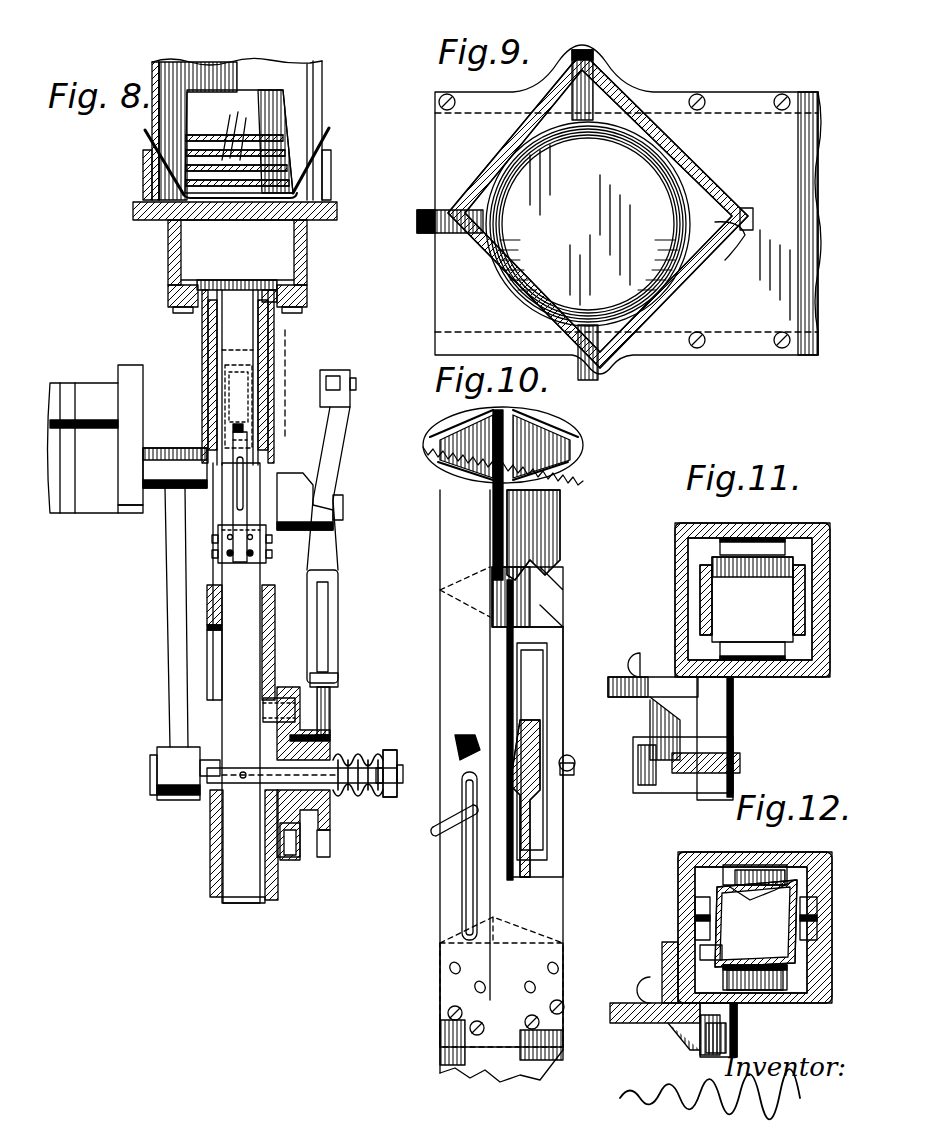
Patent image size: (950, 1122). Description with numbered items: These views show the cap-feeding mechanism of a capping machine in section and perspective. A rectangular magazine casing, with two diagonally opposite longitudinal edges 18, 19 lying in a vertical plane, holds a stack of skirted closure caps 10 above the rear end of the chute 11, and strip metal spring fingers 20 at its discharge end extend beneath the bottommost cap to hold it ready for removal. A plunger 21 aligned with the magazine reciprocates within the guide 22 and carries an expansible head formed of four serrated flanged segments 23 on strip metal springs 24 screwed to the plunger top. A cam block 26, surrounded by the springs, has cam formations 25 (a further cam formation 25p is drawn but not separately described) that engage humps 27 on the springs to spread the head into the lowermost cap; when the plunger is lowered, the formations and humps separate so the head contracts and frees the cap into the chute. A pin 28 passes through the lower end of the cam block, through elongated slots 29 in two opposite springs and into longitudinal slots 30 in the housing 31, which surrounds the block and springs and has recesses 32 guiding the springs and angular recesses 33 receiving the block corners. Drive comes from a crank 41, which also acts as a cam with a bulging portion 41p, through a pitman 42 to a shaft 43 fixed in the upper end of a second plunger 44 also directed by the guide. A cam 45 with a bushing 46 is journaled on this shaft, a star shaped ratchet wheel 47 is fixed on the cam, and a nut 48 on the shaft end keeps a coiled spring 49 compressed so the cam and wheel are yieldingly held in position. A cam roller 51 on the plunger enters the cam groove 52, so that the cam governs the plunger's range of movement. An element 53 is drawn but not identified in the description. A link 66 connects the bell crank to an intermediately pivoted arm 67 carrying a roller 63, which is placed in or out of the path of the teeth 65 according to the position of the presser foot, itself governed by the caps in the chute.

In FIG. 8, the closure caps 10 is at (239, 141).
In FIG. 9, the closure caps 10 is at (647, 187).
In FIG. 8, the chute 11 is at (273, 251).
In FIG. 9, the chute 11 is at (806, 95).
In FIG. 9, the upper longitudinal edge 18 is at (443, 212).
In FIG. 8, the longitudinal edge 19 is at (237, 68).
In FIG. 9, the longitudinal edge 19 is at (743, 238).
In FIG. 8, the spring fingers 20 is at (150, 160).
In FIG. 9, the spring fingers 20 is at (595, 55).
In FIG. 8, the plunger 21 is at (250, 625).
In FIG. 10, the plunger 21 is at (455, 1045).
In FIG. 8, the guide 22 is at (205, 598).
In FIG. 8, the flanged segments 23 is at (233, 280).
In FIG. 10, the flanged segments 23 is at (450, 461).
In FIG. 8, the strip metal springs 24 is at (247, 328).
In FIG. 10, the strip metal springs 24 is at (452, 507).
In FIG. 12, the strip metal springs 24 is at (775, 883).
In FIG. 8, the cam formations 25 is at (208, 353).
In FIG. 10, the cam formations 25 is at (530, 621).
In FIG. 12, the cam formations 25 is at (728, 885).
In FIG. 8, the inner block 25p is at (232, 388).
In FIG. 10, the inner block 25p is at (530, 686).
In FIG. 8, the cam block 26 is at (270, 361).
In FIG. 10, the cam block 26 is at (563, 658).
In FIG. 11, the cam block 26 is at (738, 555).
In FIG. 12, the cam block 26 is at (755, 975).
In FIG. 8, the humps 27 is at (233, 427).
In FIG. 10, the humps 27 is at (466, 743).
In FIG. 12, the humps 27 is at (741, 881).
In FIG. 8, the pin 28 is at (242, 475).
In FIG. 10, the pin 28 is at (568, 773).
In FIG. 12, the pin 28 is at (705, 955).
In FIG. 8, the elongated slots 29 is at (247, 481).
In FIG. 10, the elongated slots 29 is at (468, 891).
In FIG. 12, the longitudinal slots 30 is at (700, 918).
In FIG. 8, the housing 31 is at (277, 418).
In FIG. 11, the housing 31 is at (801, 670).
In FIG. 12, the housing 31 is at (721, 961).
In FIG. 8, the recesses 32 is at (208, 316).
In FIG. 11, the recesses 32 is at (688, 598).
In FIG. 12, the recesses 32 is at (650, 1036).
In FIG. 11, the angular recesses 33 is at (710, 575).
In FIG. 8, the crank 41 is at (118, 466).
In FIG. 8, the bulging portion 41p is at (118, 370).
In FIG. 8, the pitman 42 is at (170, 658).
In FIG. 8, the shaft 43 is at (210, 798).
In FIG. 8, the plunger 44 is at (243, 897).
In FIG. 8, the cam 45 is at (303, 726).
In FIG. 8, the bushing 46 is at (333, 753).
In FIG. 8, the star shaped ratchet wheel 47 is at (330, 821).
In FIG. 8, the nut 48 is at (398, 758).
In FIG. 8, the coiled spring 49 is at (377, 791).
In FIG. 8, the cam roller 51 is at (281, 698).
In FIG. 8, the cam groove 52 is at (294, 838).
In FIG. 8, the ring 53 is at (270, 296).
In FIG. 8, the roller 63 is at (327, 676).
In FIG. 8, the teeth 65 is at (322, 701).
In FIG. 8, the link 66 is at (335, 378).
In FIG. 8, the intermediately pivoted arm 67 is at (328, 561).